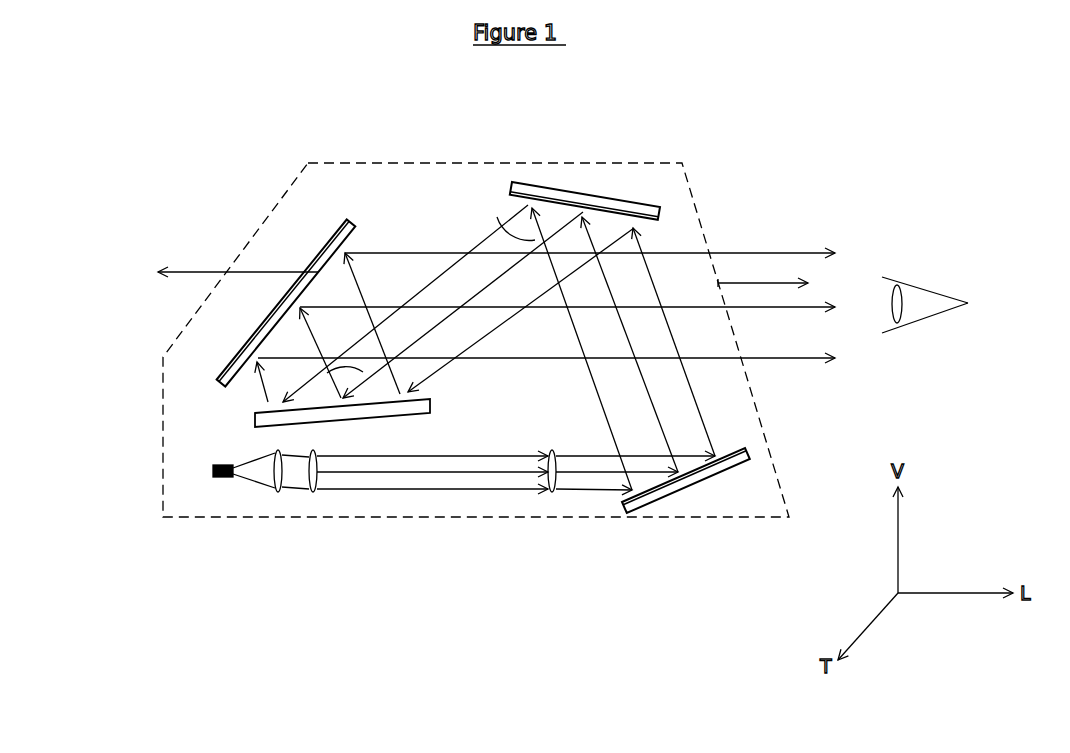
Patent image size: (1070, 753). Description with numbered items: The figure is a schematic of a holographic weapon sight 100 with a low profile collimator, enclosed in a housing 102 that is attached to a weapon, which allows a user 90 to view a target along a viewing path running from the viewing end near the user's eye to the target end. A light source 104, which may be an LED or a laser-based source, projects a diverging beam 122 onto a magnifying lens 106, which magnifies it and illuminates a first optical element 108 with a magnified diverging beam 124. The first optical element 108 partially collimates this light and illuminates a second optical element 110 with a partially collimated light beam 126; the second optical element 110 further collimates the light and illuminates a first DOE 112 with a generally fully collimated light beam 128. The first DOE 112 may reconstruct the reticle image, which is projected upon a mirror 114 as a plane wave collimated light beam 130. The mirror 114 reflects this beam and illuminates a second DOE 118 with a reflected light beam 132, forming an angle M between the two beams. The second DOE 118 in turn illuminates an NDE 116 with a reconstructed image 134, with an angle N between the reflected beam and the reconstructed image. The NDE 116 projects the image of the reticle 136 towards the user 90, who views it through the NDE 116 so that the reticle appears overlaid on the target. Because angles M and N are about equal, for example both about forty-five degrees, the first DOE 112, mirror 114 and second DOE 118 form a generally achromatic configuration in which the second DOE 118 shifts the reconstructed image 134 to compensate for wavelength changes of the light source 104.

The holographic weapon sight 100 is at (235, 160).
The housing 102 is at (340, 160).
The light source 104 is at (217, 484).
The magnifying lens 106 is at (274, 497).
The first optical element 108 is at (313, 498).
The second optical element 110 is at (557, 498).
The first DOE 112 is at (707, 497).
The mirror 114 is at (580, 183).
The NDE 116 is at (279, 302).
The second DOE 118 is at (247, 427).
The diverging beam 122 is at (253, 478).
The magnified diverging beam 124 is at (299, 497).
The partially collimated light beam 126 is at (431, 493).
The generally fully collimated light beam 128 is at (592, 494).
The plane wave collimated light beam 130 is at (703, 399).
The reflected light beam 132 is at (497, 222).
The reconstructed image 134 is at (262, 385).
The image of the reticle 136 is at (782, 253).
The user 90 is at (920, 263).